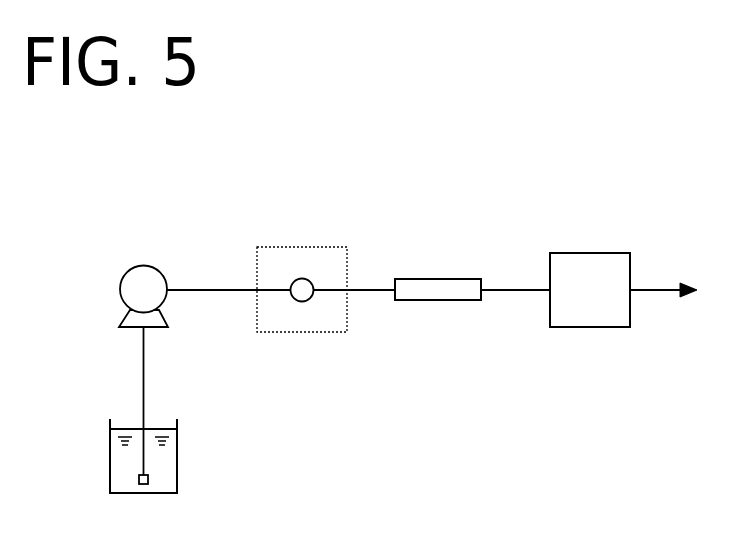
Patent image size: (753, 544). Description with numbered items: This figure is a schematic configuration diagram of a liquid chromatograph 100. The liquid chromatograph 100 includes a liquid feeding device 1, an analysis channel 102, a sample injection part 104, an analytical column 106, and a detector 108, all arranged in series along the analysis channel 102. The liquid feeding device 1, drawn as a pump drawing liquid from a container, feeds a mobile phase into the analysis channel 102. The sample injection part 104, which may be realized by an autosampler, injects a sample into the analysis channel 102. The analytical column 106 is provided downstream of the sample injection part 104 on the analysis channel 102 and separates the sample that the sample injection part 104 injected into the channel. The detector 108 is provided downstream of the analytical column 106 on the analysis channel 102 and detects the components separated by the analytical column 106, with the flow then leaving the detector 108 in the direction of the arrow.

The liquid chromatograph 100 is at (241, 168).
The liquid feeding device 1 is at (125, 271).
The analysis channel 102 is at (204, 288).
The sample injection part 104 is at (327, 247).
The analytical column 106 is at (450, 279).
The detector 108 is at (608, 253).